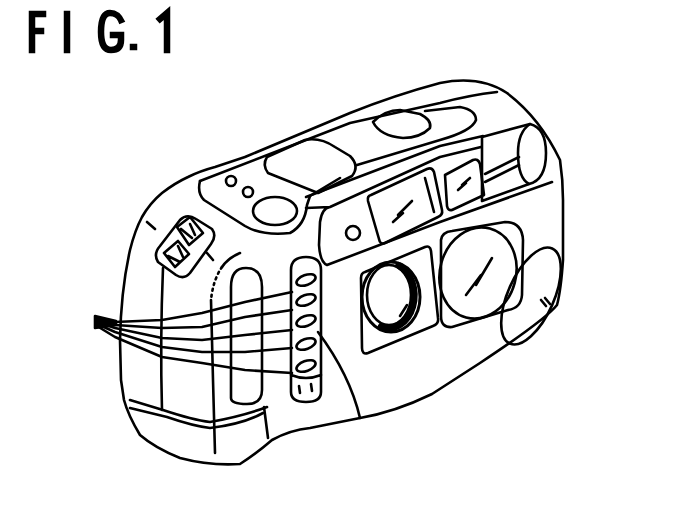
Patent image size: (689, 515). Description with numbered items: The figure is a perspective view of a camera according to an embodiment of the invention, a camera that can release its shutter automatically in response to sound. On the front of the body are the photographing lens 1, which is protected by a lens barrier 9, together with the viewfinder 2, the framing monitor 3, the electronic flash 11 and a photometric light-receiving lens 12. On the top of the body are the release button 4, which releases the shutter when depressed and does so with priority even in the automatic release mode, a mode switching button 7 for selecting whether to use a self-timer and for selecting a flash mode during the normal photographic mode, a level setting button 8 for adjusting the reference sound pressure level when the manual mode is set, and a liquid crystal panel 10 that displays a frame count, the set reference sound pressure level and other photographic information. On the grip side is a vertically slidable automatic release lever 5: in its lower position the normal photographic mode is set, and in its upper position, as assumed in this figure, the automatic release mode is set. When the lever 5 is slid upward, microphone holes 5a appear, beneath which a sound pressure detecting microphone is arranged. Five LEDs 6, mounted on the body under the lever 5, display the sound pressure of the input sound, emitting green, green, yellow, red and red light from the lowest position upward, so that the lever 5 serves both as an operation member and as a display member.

The photographing lens 1 is at (388, 303).
The viewfinder 2 is at (396, 200).
The framing monitor 3 is at (465, 185).
The release button 4 is at (273, 206).
The automatic release lever 5 is at (352, 398).
The microphone holes 5a is at (306, 402).
The LEDs 6 is at (179, 332).
The mode switching button 7 is at (246, 189).
The level setting button 8 is at (226, 180).
The lens barrier 9 is at (473, 300).
The liquid crystal panel 10 is at (297, 170).
The electronic flash 11 is at (538, 138).
The photometric light-receiving lens 12 is at (353, 227).